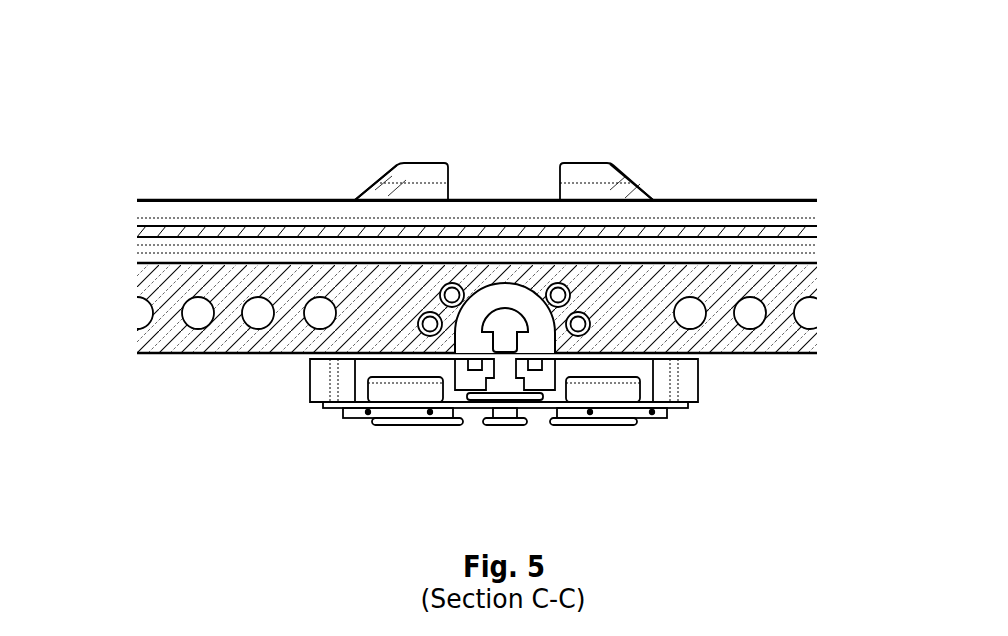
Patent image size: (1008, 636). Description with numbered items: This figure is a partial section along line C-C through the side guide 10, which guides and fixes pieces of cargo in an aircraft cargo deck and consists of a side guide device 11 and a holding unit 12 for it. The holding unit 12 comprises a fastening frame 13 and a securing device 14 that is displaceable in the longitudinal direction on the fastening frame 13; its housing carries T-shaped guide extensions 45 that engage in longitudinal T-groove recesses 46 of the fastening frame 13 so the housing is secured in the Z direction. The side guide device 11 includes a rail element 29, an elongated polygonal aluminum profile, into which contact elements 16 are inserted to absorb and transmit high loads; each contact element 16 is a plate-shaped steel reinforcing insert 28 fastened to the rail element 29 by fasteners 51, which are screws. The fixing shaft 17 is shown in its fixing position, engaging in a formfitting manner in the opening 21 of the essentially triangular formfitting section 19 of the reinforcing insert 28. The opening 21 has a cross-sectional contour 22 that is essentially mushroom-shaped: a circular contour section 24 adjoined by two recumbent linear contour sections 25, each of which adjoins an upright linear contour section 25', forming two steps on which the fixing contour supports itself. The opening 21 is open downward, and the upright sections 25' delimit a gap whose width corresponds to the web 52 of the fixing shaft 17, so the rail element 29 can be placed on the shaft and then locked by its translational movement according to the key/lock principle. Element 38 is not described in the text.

The side guide 10 is at (121, 92).
The side guide device 11 is at (745, 153).
The holding unit 12 is at (506, 448).
The fastening frame 13 is at (310, 388).
The securing device 14 is at (470, 400).
The contact element 16 is at (462, 300).
The fixing shaft 17 is at (413, 403).
The formfitting section 19 is at (492, 412).
The opening 21 is at (506, 340).
The cross-sectional contour 22 is at (498, 312).
The circular contour section 24 is at (560, 283).
The recumbent linear contour section 25 is at (536, 312).
The upright linear contour section 25' is at (544, 330).
The reinforcing insert 28 is at (447, 283).
The rail element 29 is at (217, 198).
The protrusion 38 is at (365, 185).
The guide extension 45 is at (590, 418).
The recess 46 is at (617, 427).
The fastener 51 is at (600, 300).
The web 52 is at (486, 310).